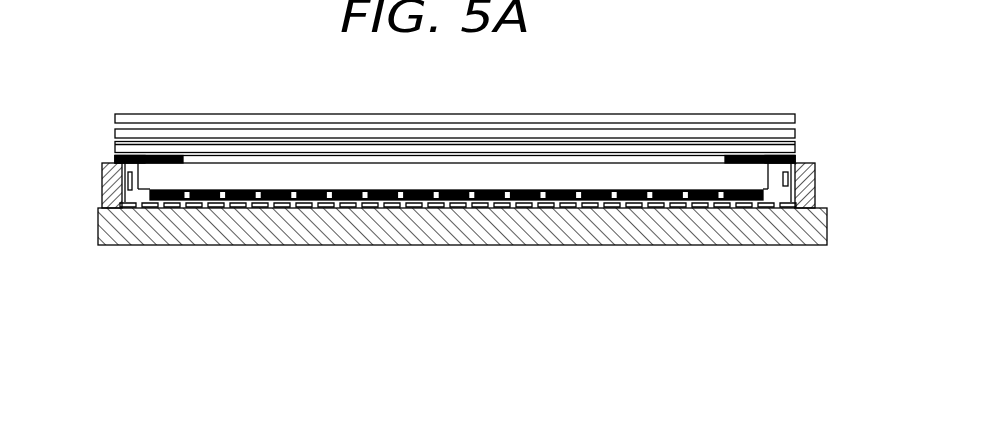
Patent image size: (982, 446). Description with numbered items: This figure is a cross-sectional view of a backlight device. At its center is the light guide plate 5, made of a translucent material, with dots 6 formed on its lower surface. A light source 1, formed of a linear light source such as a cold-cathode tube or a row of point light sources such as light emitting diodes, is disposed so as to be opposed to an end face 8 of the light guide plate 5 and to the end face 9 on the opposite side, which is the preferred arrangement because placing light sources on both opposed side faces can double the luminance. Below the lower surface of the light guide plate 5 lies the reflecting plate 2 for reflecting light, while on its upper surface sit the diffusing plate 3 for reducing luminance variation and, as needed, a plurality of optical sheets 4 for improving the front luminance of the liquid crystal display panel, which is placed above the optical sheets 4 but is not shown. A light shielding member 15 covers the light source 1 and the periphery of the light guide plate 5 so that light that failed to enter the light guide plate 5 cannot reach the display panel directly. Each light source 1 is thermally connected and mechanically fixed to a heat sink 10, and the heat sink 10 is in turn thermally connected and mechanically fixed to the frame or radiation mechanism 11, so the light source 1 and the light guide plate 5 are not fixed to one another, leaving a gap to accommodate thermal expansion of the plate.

The light source 1 is at (136, 156).
The reflecting plate 2 is at (640, 200).
The diffusing plate 3 is at (795, 147).
The optical sheets 4 is at (795, 132).
The light guide plate 5 is at (497, 183).
The dots 6 is at (366, 200).
The end face 8 is at (783, 187).
The end face 9 is at (133, 190).
The heat sink 10 is at (101, 170).
The radiation mechanism 11 is at (219, 245).
The light shielding member 15 is at (168, 156).